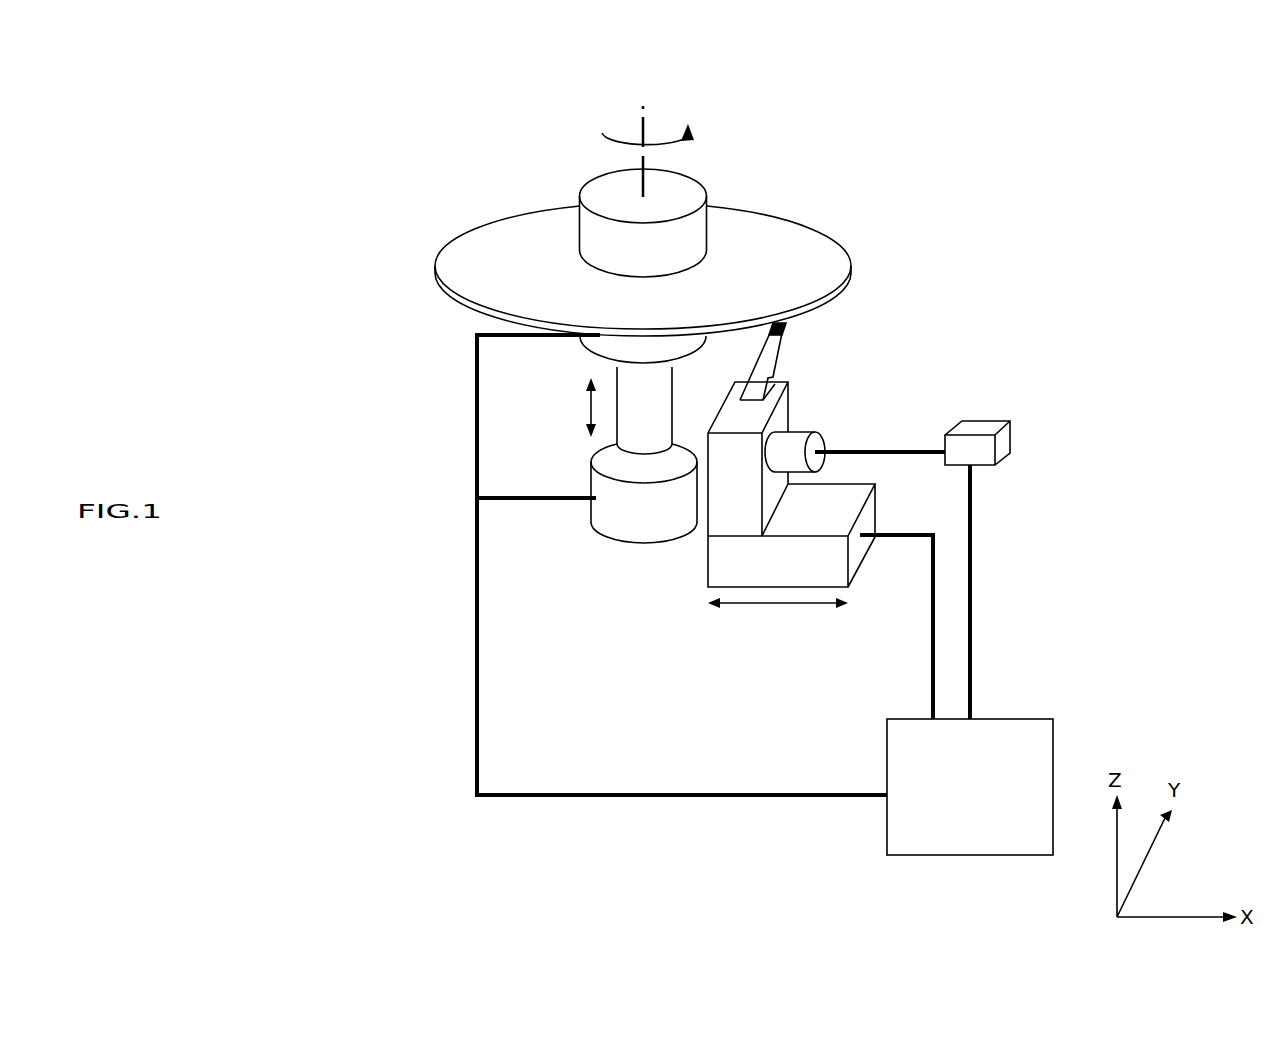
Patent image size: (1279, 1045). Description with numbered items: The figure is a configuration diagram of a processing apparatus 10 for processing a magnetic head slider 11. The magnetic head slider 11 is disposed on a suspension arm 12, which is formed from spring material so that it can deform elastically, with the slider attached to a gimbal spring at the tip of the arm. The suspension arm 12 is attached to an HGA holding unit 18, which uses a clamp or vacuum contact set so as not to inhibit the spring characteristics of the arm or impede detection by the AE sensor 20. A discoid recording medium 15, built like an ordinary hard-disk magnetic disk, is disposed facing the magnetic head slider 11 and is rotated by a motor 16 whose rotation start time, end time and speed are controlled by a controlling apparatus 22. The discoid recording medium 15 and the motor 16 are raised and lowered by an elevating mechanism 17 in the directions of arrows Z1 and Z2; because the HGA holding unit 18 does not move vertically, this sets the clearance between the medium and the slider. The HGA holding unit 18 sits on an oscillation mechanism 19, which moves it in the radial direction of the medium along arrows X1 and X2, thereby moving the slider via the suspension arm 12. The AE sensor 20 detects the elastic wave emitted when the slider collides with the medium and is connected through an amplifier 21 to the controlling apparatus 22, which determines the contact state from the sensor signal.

The processing apparatus 10 is at (915, 111).
The magnetic head slider 11 is at (786, 326).
The suspension arm 12 is at (767, 363).
The discoid recording medium 15 is at (468, 245).
The motor 16 is at (600, 188).
The elevating mechanism 17 is at (617, 518).
The HGA holding unit 18 is at (733, 520).
The oscillation mechanism 19 is at (787, 576).
The AE sensor 20 is at (793, 445).
The amplifier 21 is at (978, 452).
The controlling apparatus 22 is at (1022, 719).